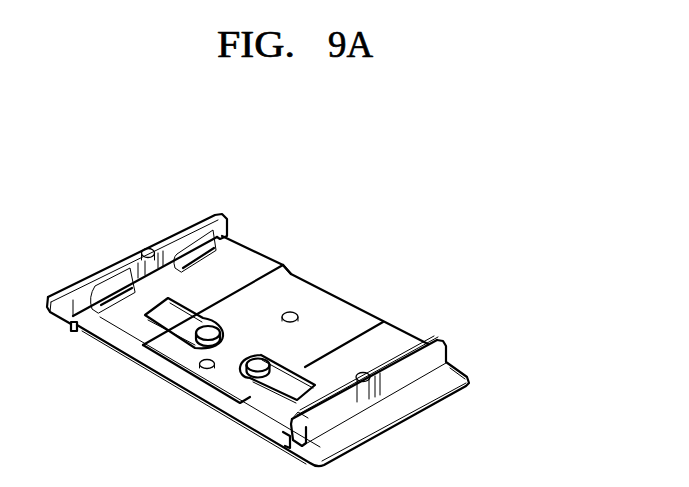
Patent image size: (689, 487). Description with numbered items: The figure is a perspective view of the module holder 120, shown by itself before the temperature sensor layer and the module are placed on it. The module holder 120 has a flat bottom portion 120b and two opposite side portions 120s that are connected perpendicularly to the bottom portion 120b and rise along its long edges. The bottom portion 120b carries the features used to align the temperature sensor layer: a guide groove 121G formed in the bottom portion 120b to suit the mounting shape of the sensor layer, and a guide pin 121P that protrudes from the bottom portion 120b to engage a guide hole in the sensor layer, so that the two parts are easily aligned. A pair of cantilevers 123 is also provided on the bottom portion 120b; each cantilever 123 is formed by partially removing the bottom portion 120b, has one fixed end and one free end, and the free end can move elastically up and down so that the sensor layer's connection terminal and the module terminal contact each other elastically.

The module holder 120 is at (445, 208).
The side portions 120s is at (402, 380).
The bottom portion 120b is at (397, 334).
The guide groove 121G is at (295, 274).
The cantilevers 123 is at (257, 366).
The guide pin 121P is at (206, 369).